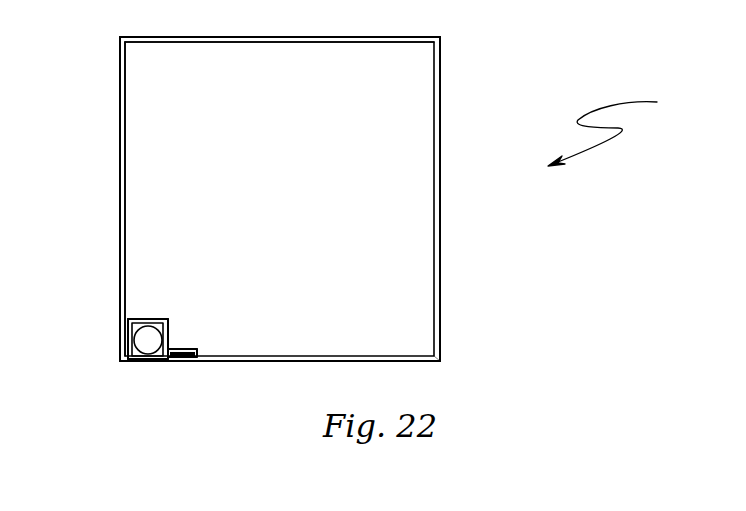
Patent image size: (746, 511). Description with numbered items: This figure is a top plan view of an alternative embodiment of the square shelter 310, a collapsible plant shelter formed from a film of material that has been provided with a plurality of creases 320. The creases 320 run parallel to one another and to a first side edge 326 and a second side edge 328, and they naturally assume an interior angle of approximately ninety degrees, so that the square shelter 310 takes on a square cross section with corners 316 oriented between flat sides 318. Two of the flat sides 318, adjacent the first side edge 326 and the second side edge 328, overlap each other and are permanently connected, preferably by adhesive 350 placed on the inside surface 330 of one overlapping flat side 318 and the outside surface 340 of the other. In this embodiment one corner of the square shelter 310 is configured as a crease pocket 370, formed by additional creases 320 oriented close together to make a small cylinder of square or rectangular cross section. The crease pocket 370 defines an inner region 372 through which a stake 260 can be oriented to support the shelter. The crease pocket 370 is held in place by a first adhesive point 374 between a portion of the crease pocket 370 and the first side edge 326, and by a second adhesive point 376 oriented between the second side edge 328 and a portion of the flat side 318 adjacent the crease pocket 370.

The square shelter 310 is at (626, 128).
The corners 316 is at (440, 37).
The flat sides 318 is at (440, 108).
The creases 320 is at (440, 360).
The first side edge 326 is at (122, 357).
The second side edge 328 is at (197, 350).
The inside surface 330 is at (432, 152).
The outside surface 340 is at (218, 37).
The adhesive 350 is at (128, 345).
The crease pocket 370 is at (161, 353).
The inner region 372 is at (161, 325).
The first adhesive point 374 is at (125, 350).
The second adhesive point 376 is at (195, 357).
The stake 260 is at (144, 335).